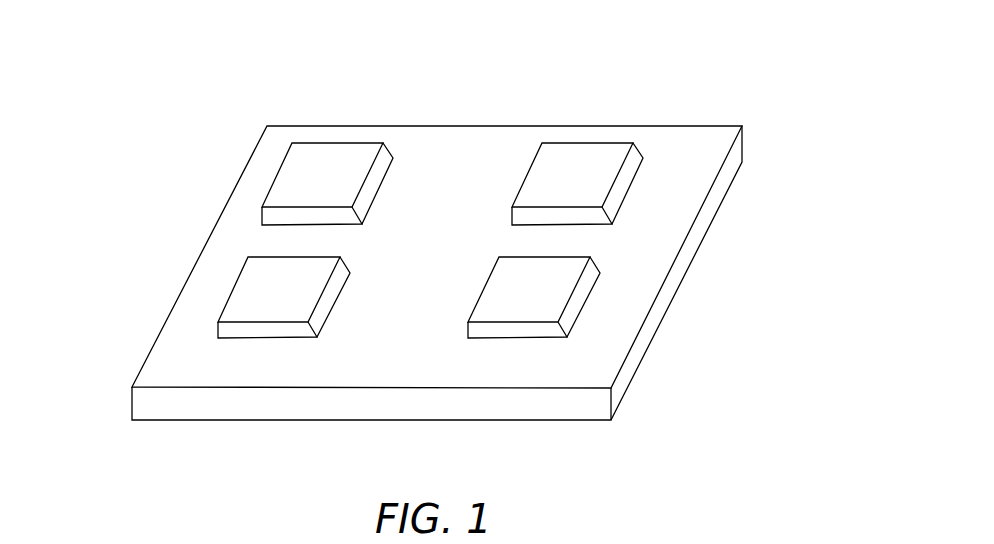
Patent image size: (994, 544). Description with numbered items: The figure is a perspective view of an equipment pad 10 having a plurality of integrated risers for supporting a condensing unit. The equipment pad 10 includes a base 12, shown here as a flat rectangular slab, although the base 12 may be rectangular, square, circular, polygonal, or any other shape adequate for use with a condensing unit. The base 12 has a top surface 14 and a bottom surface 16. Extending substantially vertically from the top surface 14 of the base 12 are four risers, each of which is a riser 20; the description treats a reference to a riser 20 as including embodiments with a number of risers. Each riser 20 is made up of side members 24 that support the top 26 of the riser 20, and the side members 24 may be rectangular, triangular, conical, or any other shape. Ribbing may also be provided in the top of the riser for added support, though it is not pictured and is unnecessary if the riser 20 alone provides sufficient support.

The equipment pad 10 is at (434, 267).
The base 12 is at (434, 327).
The top surface 14 is at (643, 240).
The bottom surface 16 is at (197, 420).
The riser 20 is at (281, 140).
The side members 24 is at (492, 337).
The top of the riser 26 is at (262, 289).